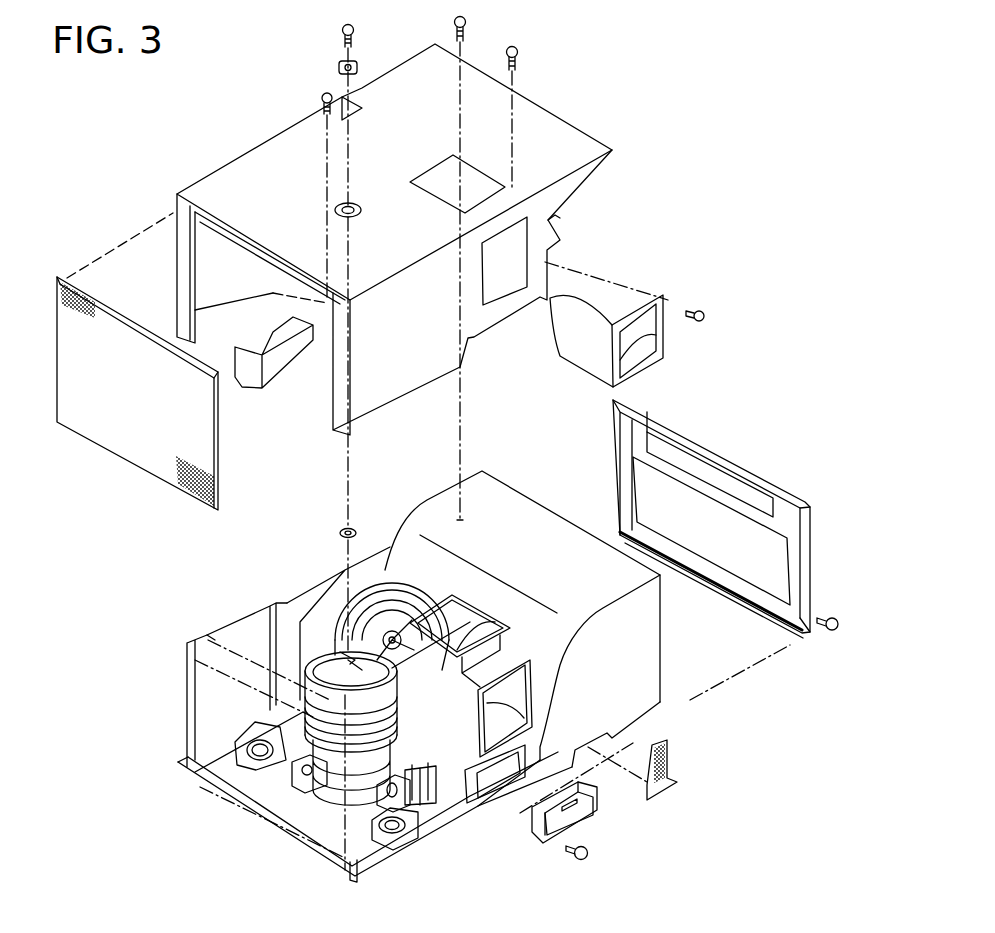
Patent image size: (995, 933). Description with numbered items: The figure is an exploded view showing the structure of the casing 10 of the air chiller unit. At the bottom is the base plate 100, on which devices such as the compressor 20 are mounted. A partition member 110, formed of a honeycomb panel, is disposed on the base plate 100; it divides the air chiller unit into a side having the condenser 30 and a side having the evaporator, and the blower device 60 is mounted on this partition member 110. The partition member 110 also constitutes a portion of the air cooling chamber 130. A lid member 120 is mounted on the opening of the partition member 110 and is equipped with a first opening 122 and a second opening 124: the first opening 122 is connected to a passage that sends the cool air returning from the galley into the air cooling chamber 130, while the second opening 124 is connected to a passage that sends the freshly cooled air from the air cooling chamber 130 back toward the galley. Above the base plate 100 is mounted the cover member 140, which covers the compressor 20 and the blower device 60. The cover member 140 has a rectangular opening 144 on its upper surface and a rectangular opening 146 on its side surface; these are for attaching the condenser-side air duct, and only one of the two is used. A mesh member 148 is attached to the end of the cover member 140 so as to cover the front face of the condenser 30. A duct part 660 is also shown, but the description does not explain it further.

The casing 10 is at (630, 168).
The compressor 20 is at (283, 663).
The condenser 30 is at (207, 680).
The blower device 60 is at (436, 560).
The base plate 100 is at (450, 817).
The partition member 110 is at (494, 503).
The lid member 120 is at (755, 482).
The first opening 122 is at (747, 563).
The second opening 124 is at (675, 452).
The air cooling chamber 130 is at (578, 512).
The cover member 140 is at (227, 183).
The rectangular opening 144 is at (488, 188).
The rectangular opening 146 is at (510, 245).
The mesh member 148 is at (193, 500).
The air outlet duct 660 is at (626, 297).